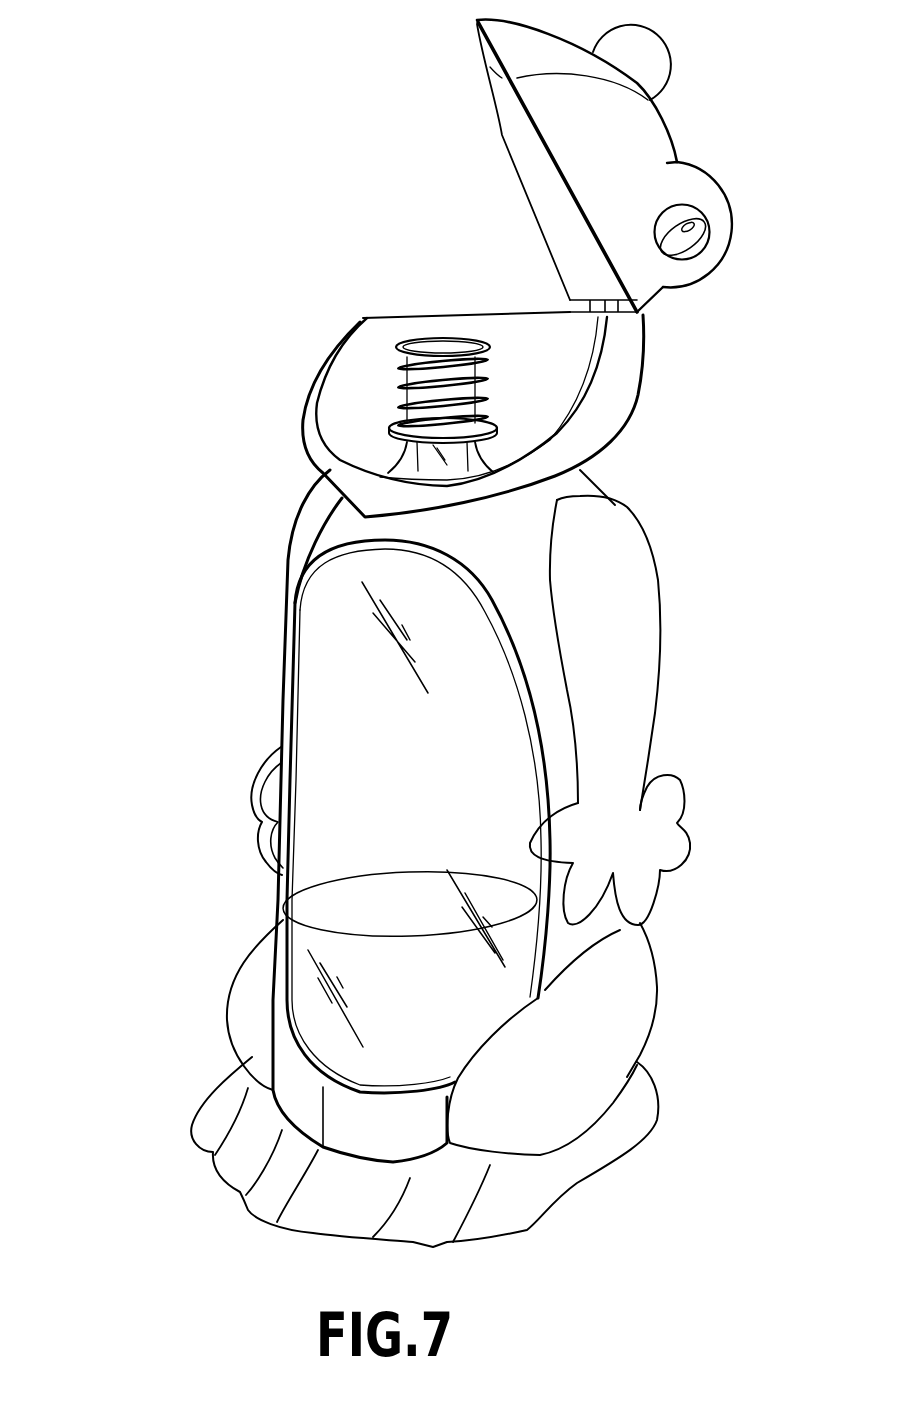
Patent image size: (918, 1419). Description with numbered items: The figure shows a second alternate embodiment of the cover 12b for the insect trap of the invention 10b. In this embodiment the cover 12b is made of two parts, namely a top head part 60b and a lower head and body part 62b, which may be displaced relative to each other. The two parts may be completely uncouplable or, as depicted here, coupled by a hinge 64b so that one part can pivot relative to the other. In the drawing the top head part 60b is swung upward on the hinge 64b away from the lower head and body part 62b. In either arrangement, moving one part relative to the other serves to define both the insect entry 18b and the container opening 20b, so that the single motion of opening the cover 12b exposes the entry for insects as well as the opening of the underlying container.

The invention 10b is at (163, 4).
The cover 12b is at (287, 563).
The insect entry 18b is at (358, 360).
The container opening 20b is at (325, 416).
The top head part 60b is at (663, 148).
The lower head and body part 62b is at (650, 537).
The hinge 64b is at (627, 318).